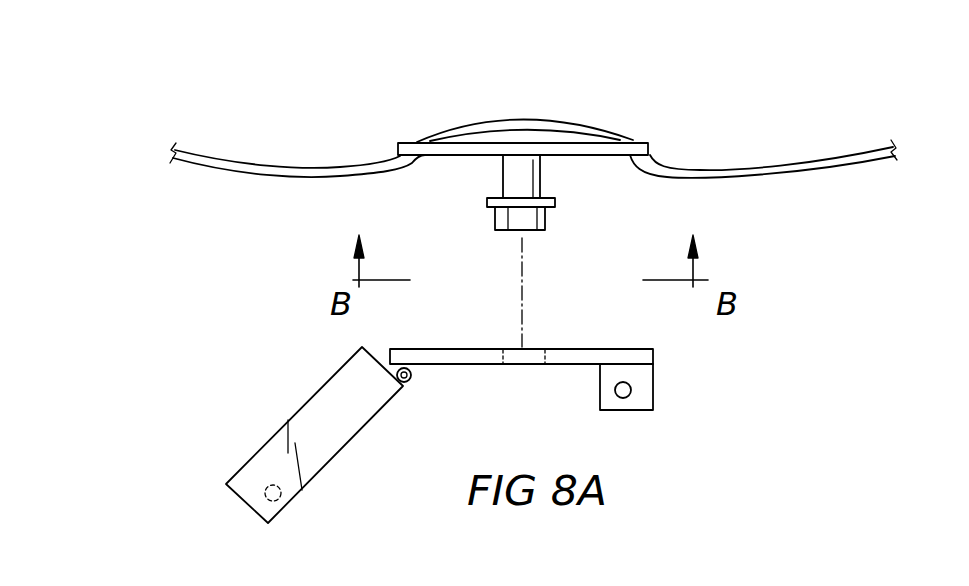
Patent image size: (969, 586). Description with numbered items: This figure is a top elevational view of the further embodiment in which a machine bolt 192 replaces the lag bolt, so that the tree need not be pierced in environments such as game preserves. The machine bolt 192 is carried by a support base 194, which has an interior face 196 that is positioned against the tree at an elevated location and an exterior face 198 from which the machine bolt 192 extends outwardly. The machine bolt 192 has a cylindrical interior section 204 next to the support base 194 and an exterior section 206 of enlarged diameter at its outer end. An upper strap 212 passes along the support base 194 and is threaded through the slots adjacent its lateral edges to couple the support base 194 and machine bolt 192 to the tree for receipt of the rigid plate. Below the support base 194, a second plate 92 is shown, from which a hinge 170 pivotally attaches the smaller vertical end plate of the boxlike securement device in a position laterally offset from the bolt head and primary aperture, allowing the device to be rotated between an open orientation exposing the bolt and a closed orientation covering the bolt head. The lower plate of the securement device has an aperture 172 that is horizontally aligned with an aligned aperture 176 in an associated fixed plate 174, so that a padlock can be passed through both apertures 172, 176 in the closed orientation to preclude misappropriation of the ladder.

The base plate 92 is at (640, 357).
The hinge 170 is at (410, 378).
The aperture 172 is at (297, 493).
The fixed plate 174 is at (643, 398).
The aligned aperture 176 is at (617, 392).
The machine bolt 192 is at (545, 178).
The support base 194 is at (650, 142).
The interior face 196 is at (635, 140).
The exterior face 198 is at (462, 148).
The cylindrical interior section 204 is at (498, 178).
The exterior section 206 is at (550, 210).
The upper strap 212 is at (782, 167).